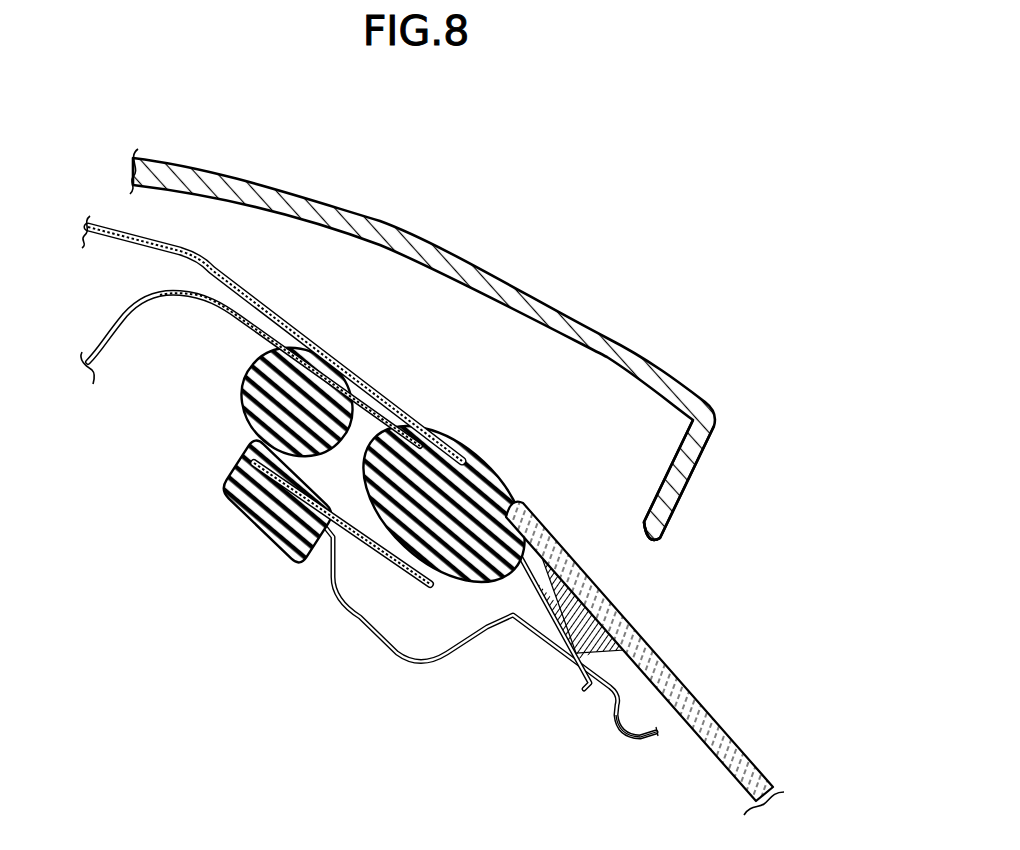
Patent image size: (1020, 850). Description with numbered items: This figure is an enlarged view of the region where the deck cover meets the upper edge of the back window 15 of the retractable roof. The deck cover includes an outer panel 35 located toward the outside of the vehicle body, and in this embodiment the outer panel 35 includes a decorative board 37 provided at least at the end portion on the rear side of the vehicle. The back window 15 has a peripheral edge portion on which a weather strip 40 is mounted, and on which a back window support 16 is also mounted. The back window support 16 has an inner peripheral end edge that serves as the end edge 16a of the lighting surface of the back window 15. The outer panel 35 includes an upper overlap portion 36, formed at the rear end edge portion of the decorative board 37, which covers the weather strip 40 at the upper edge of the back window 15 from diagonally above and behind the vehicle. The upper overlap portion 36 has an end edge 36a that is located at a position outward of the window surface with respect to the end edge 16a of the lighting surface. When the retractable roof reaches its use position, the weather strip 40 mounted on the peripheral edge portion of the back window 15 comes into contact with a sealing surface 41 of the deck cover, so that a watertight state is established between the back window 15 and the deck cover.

The back window 15 is at (733, 740).
The back window support 16 is at (504, 667).
The end edge of lighting surface 16a is at (655, 737).
The outer panel 35 is at (461, 349).
The upper overlap portion 36 is at (718, 490).
The end edge of upper overlap portion 36a is at (658, 522).
The decorative board 37 is at (362, 218).
The weather strip 40 is at (468, 505).
The sealing surface 41 is at (225, 313).